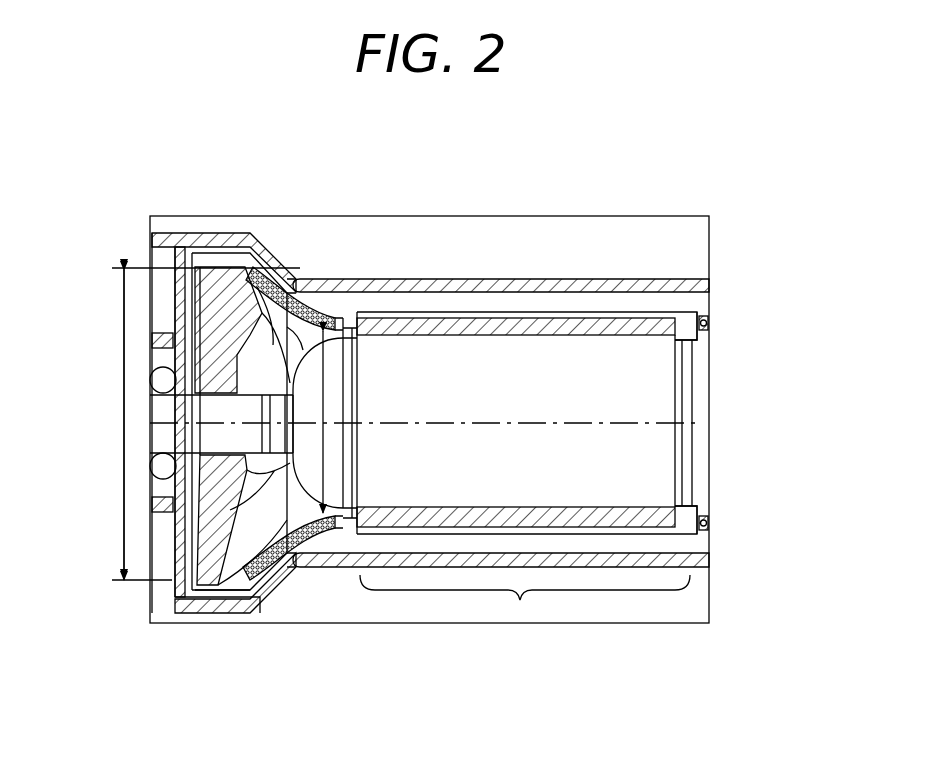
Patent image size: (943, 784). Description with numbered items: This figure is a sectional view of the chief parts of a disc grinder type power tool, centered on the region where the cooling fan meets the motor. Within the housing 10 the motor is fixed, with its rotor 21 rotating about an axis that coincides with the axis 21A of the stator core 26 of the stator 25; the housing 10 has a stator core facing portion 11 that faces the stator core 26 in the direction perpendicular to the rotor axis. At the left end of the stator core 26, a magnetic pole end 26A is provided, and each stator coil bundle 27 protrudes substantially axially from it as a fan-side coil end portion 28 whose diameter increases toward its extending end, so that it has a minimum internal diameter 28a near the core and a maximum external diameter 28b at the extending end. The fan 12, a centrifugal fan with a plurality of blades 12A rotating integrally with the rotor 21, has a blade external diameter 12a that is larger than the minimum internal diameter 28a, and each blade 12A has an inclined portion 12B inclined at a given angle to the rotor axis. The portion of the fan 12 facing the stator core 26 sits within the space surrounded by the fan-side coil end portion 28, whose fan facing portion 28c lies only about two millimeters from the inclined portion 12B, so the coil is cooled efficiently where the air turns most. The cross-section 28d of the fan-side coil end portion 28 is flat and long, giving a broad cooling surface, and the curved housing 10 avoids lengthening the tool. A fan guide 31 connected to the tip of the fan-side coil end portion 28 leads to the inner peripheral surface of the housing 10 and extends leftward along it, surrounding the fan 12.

The housing 10 is at (690, 568).
The stator core facing portion 11 is at (518, 603).
The fan 12 is at (185, 616).
The blade 12A is at (215, 262).
The inclined portion 12B is at (280, 280).
The blade external diameter 12a is at (124, 382).
The rotor 21 is at (653, 387).
The axis of stator core 21A is at (645, 425).
The stator 25 is at (663, 522).
The stator core 26 is at (612, 279).
The magnetic pole end 26A is at (677, 312).
The stator coil bundle 27 is at (322, 330).
The fan-side coil end portion 28 is at (333, 565).
The minimum internal diameter 28a is at (323, 400).
The maximum external diameter 28b is at (296, 575).
The fan facing portion 28c is at (265, 270).
The cross-section 28d is at (320, 300).
The fan guide 31 is at (222, 612).